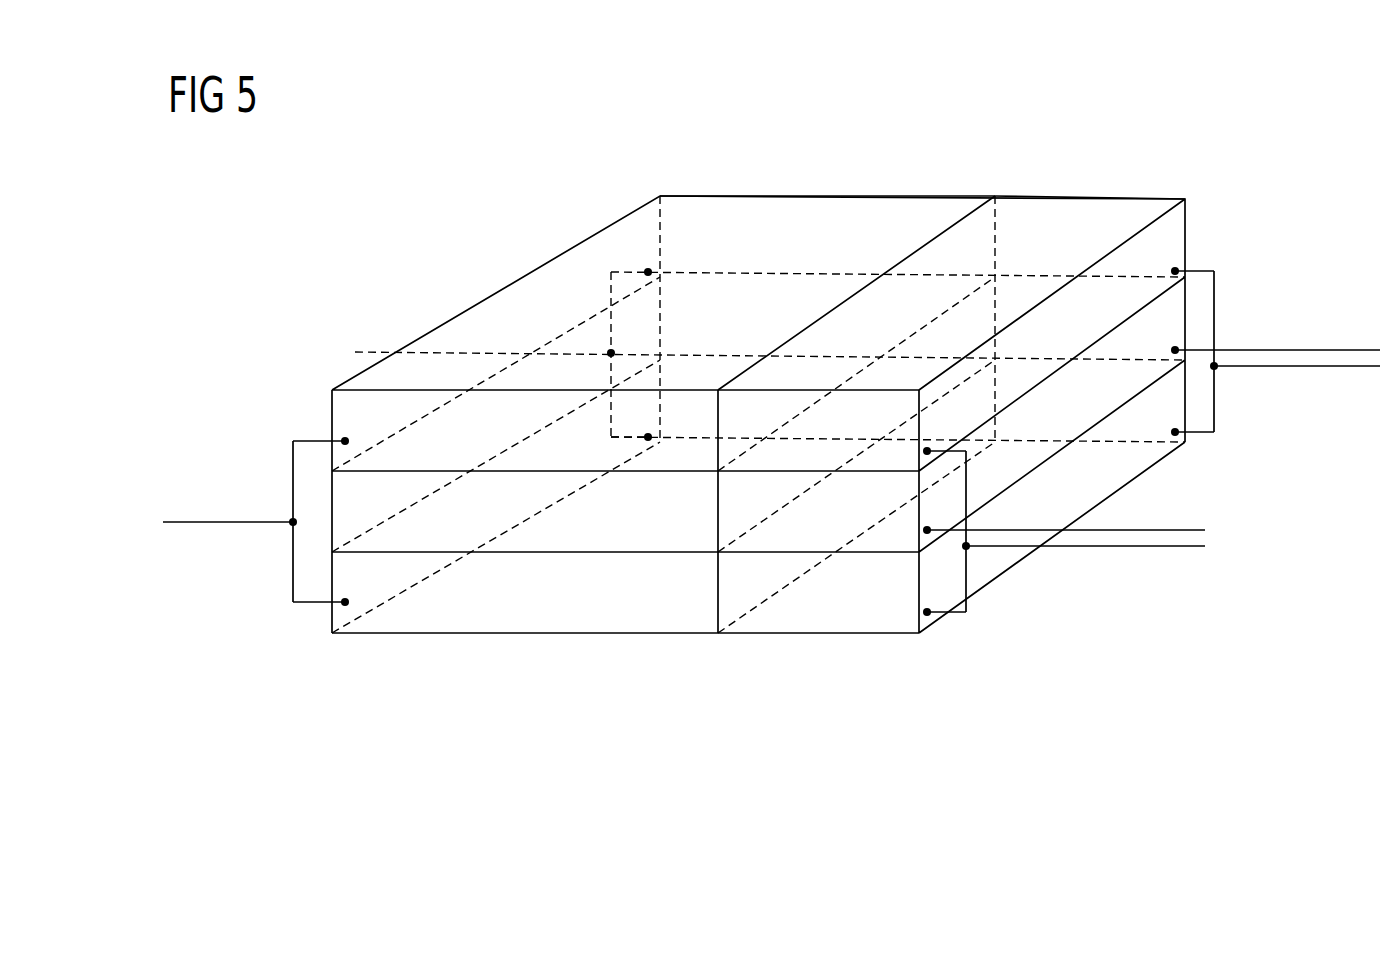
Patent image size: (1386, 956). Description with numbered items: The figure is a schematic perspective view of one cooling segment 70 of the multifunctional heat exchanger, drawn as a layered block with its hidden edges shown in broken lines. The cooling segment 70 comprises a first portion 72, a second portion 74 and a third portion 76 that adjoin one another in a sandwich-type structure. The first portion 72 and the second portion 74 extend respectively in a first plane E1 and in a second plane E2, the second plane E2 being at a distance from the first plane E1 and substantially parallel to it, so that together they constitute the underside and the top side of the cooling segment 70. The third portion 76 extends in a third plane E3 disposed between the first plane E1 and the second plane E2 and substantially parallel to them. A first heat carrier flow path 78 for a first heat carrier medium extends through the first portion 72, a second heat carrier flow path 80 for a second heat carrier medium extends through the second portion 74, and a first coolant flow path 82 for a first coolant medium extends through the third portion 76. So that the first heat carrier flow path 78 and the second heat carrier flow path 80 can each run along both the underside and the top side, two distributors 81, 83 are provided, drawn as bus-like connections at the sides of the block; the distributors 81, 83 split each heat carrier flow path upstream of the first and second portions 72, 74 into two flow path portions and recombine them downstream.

The cooling segment 70 is at (758, 386).
The first portion 72 is at (681, 200).
The second portion 74 is at (1149, 208).
The third portion 76 is at (631, 552).
The first heat carrier flow path 78 is at (244, 521).
The second heat carrier flow path 80 is at (1276, 367).
The distributor 81 is at (315, 440).
The first coolant flow path 82 is at (1276, 350).
The distributor 83 is at (1208, 270).
The first plane E1 is at (850, 196).
The second plane E2 is at (833, 357).
The third electrode plane E3 is at (930, 277).